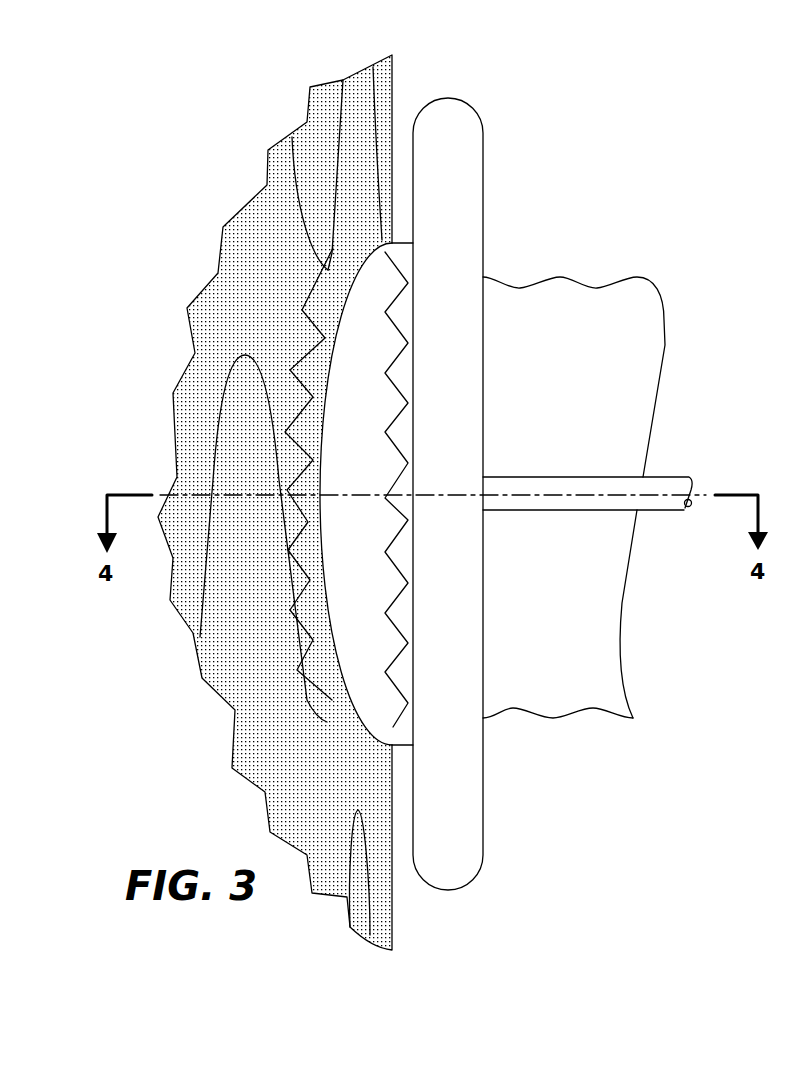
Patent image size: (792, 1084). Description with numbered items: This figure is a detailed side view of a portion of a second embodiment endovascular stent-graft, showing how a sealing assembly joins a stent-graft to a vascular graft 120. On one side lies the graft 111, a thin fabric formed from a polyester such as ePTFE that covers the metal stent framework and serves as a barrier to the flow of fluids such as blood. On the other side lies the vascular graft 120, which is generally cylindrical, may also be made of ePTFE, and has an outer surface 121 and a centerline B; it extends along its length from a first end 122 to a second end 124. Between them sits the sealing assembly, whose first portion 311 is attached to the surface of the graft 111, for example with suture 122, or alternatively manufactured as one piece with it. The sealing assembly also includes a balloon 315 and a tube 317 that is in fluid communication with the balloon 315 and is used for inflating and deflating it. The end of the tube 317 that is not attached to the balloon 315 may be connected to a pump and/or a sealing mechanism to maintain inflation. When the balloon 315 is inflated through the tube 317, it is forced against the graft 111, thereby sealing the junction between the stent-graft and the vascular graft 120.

The graft 111 is at (277, 304).
The vascular graft 120 is at (603, 448).
The outer surface 121 is at (580, 386).
The first end 122 is at (335, 713).
The second end 124 is at (622, 623).
The first portion 311 is at (475, 502).
The balloon 315 is at (455, 127).
The tube 317 is at (650, 510).
The centerline B is at (558, 498).